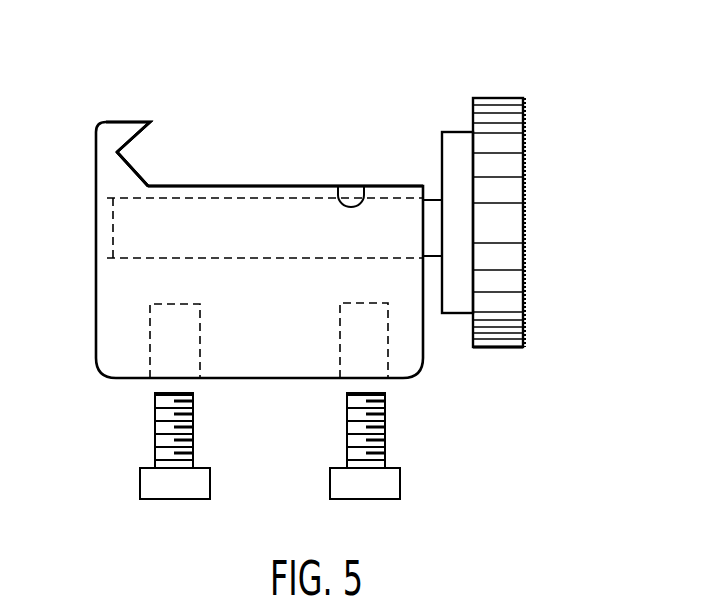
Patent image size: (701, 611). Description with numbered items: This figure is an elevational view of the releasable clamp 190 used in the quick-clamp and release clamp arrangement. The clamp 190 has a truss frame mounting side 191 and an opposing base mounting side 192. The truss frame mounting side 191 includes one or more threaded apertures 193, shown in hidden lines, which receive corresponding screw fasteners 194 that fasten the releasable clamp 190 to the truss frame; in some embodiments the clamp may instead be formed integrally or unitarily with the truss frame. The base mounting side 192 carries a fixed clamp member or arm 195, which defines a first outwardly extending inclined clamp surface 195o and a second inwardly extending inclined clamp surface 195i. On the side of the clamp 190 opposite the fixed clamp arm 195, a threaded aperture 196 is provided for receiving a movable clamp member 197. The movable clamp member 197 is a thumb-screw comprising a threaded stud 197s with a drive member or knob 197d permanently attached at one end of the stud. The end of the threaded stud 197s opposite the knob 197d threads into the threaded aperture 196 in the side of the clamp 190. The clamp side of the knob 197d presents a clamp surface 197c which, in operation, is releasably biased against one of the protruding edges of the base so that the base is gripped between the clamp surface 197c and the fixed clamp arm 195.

The releasable clamp 190 is at (184, 68).
The truss frame mounting side 191 is at (104, 380).
The base mounting side 192 is at (316, 174).
The threaded aperture 193 is at (386, 334).
The screw fastener 194 is at (400, 478).
The fixed clamp member or arm 195 is at (104, 146).
The first outwardly extending inclined clamp surface 195o is at (150, 131).
The second inwardly extending inclined clamp surface 195i is at (140, 174).
The threaded aperture 196 is at (366, 200).
The movable clamp member 197 is at (530, 167).
The clamp surface 197c is at (440, 160).
The drive member or knob 197d is at (502, 348).
The threaded stud 197s is at (132, 226).